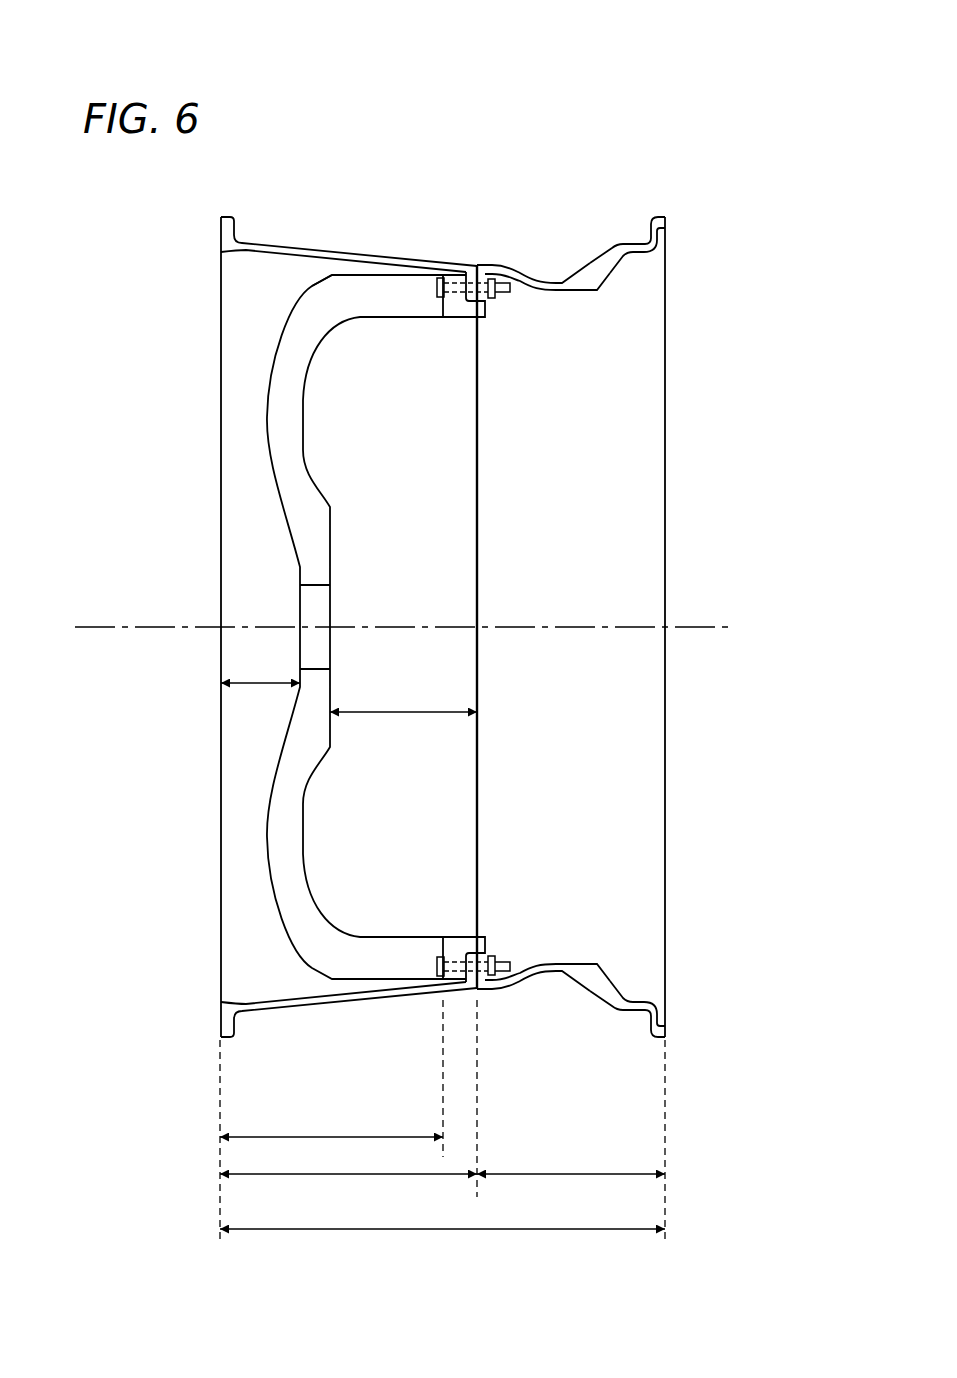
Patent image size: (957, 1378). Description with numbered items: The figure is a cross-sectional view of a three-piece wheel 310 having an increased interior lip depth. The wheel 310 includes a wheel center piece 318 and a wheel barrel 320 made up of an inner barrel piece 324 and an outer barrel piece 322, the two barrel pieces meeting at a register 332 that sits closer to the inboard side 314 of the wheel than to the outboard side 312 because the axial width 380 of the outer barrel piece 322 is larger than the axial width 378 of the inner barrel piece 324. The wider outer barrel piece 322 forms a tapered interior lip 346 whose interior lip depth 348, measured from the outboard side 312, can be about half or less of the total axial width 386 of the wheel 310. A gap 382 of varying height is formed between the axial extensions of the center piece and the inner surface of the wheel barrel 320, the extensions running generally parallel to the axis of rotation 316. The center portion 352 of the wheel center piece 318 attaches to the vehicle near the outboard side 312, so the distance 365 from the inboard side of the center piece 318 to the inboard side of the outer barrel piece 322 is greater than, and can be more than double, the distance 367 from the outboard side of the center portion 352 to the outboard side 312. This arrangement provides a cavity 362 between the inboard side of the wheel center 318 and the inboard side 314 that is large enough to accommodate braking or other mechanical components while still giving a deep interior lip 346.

The three-piece wheel 310 is at (572, 116).
The outboard side of the wheel 312 is at (262, 623).
The inboard side of the wheel 314 is at (707, 594).
The axis of rotation 316 is at (165, 627).
The wheel center piece 318 is at (303, 505).
The wheel barrel 320 is at (442, 205).
The outer barrel piece 322 is at (327, 246).
The inner barrel piece 324 is at (612, 250).
The register 332 is at (500, 943).
The interior lip 346 is at (253, 1000).
The interior lip depth 348 is at (250, 1137).
The center portion 352 is at (315, 575).
The cavity 362 is at (441, 484).
The distance 365 is at (437, 712).
The distance 367 is at (258, 683).
The axial width of the inner barrel piece 378 is at (612, 1173).
The axial width of the outer barrel piece 380 is at (270, 1174).
The gap 382 is at (332, 268).
The total axial width of the wheel 386 is at (283, 1229).